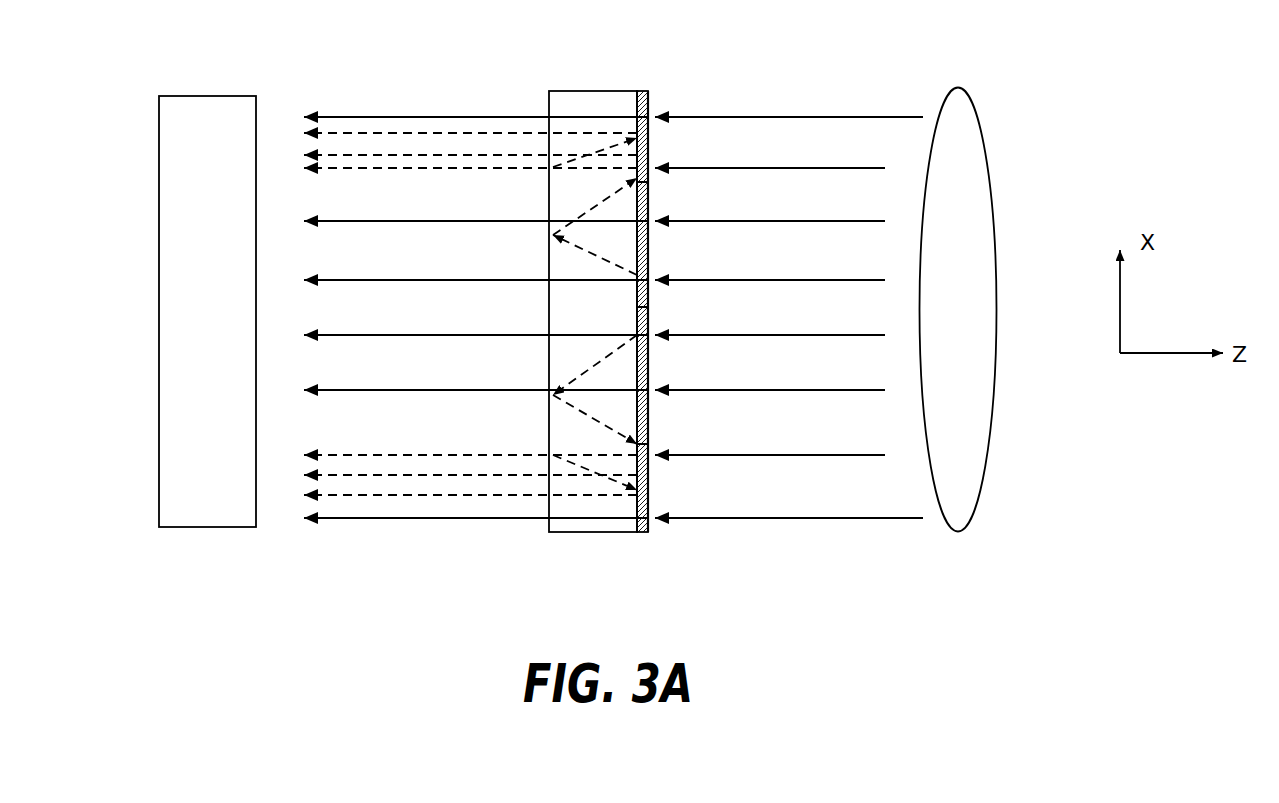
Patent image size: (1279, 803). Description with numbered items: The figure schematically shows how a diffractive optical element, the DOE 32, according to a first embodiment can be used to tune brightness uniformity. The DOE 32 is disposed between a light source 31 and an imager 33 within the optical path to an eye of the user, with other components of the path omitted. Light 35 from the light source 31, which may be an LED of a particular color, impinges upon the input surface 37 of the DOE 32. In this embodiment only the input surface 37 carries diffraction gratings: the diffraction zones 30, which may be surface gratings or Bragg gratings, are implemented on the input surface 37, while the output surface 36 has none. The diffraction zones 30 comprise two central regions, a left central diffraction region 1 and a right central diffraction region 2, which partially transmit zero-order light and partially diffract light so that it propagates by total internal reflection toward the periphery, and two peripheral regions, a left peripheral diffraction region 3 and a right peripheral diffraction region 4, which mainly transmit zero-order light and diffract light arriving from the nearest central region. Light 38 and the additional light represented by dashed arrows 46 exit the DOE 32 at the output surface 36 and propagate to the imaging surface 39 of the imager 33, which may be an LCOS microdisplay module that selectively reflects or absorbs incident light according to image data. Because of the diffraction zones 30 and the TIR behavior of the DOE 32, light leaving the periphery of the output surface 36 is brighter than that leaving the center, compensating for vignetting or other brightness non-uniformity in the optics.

The left central diffraction region 1 is at (648, 368).
The right central diffraction region 2 is at (648, 246).
The left peripheral diffraction region 3 is at (648, 488).
The right peripheral diffraction region 4 is at (648, 143).
The diffraction zones 30 is at (691, 284).
The light source 31 is at (981, 123).
The DOE 32 is at (612, 281).
The imager 33 is at (212, 280).
The light 35 is at (787, 281).
The output surface 36 is at (549, 106).
The input surface 37 is at (658, 108).
The light 38 is at (364, 281).
The imaging surface 39 is at (256, 104).
The dashed arrows 46 is at (360, 134).